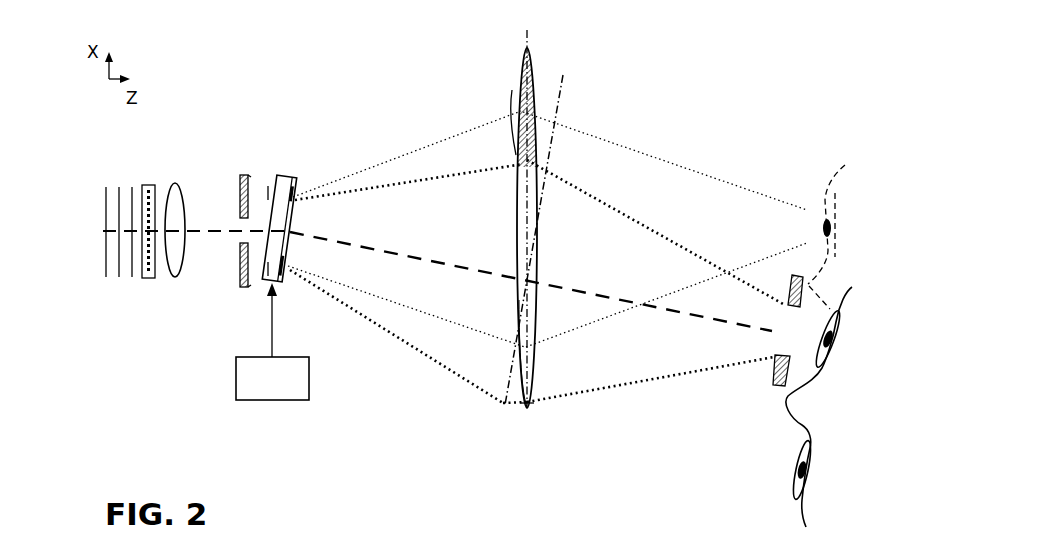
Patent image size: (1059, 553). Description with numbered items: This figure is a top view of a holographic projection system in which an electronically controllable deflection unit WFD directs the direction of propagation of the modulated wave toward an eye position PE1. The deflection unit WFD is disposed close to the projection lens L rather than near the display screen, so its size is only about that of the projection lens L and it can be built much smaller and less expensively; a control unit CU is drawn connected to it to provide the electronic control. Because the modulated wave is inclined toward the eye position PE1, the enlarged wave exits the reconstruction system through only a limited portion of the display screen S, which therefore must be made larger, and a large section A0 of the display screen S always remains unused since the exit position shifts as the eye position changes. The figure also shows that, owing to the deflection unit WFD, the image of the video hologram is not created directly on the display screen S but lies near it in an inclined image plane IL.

The projection lens L is at (180, 247).
The wavefront deflector WFD is at (292, 187).
The control unit CU is at (272, 341).
The inclined image plane IL is at (555, 219).
The section of the display screen A0 is at (518, 130).
The display screen S is at (542, 416).
The eye position PE1 is at (790, 330).